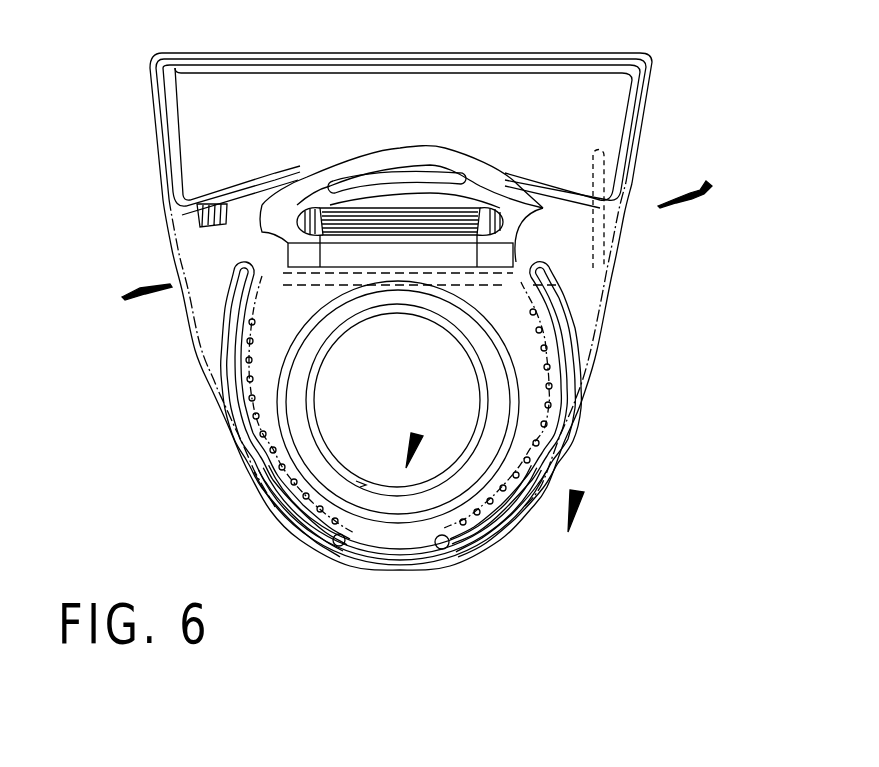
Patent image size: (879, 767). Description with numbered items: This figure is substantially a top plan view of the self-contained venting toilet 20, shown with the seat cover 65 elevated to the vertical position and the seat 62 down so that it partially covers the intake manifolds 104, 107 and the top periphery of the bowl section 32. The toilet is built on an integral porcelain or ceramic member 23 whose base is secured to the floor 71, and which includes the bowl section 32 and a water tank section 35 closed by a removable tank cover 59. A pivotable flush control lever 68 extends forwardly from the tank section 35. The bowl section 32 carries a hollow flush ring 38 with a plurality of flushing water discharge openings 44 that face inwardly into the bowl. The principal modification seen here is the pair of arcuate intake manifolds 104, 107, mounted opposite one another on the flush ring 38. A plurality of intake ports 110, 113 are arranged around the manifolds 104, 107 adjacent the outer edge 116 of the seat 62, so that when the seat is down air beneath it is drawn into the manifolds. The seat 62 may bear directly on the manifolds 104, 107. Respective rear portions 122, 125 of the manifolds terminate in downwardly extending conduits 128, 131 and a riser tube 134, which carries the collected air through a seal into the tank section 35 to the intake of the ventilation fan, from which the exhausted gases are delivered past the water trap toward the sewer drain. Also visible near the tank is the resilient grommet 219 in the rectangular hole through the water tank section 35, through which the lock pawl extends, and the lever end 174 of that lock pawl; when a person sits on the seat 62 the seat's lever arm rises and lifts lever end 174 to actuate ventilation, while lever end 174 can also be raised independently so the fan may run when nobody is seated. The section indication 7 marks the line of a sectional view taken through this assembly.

The self-contained venting toilet 20 is at (705, 188).
The integral porcelain or ceramic member 23 is at (122, 297).
The bowl section 32 is at (598, 347).
The water tank section 35 is at (393, 53).
The hollow flush ring 38 is at (497, 535).
The flushing water discharge openings 44 is at (252, 408).
The removable tank cover 59 is at (421, 131).
The seat 62 is at (285, 226).
The seat cover 65 is at (462, 158).
The pivotable flush control lever 68 is at (185, 228).
The floor 71 is at (170, 446).
The intake manifold 104 is at (257, 465).
The intake manifold 107 is at (569, 405).
The intake ports 110 is at (267, 442).
The intake ports 113 is at (548, 377).
The outer edge of seat 116 is at (330, 180).
The rear portion of intake manifold 122 is at (225, 307).
The rear portion of intake manifold 125 is at (576, 308).
The downwardly extending conduit 128 is at (260, 288).
The downwardly extending conduit 131 is at (548, 253).
The riser tube 134 is at (582, 282).
The lever end of lock pawl 174 is at (554, 235).
The resilient grommet 219 is at (565, 196).
The section line 7- 7 is at (447, 440).